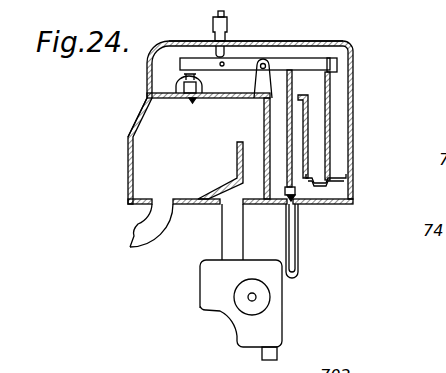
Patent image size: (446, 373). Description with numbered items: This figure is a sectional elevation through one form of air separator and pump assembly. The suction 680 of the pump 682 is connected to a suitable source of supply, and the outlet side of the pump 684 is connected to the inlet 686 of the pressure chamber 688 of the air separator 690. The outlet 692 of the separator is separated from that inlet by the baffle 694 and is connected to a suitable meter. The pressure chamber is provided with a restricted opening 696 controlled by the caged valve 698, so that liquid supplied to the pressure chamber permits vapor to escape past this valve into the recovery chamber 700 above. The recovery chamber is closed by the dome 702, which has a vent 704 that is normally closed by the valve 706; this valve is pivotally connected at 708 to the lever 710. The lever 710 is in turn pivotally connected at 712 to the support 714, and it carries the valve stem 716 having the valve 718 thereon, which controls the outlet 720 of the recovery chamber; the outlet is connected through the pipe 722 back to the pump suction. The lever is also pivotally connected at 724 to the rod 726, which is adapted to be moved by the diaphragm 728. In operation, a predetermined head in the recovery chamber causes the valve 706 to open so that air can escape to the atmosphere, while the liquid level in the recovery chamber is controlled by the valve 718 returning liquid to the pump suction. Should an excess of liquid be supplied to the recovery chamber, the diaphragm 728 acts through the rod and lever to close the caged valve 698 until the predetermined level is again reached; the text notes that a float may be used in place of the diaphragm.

The suction 680 is at (277, 351).
The pump 682 is at (283, 298).
The outlet side of the pump 684 is at (218, 257).
The inlet 686 is at (218, 205).
The pressure chamber 688 is at (130, 134).
The air separator 690 is at (143, 105).
The outlet 692 is at (143, 208).
The baffle 694 is at (222, 184).
The restricted opening 696 is at (183, 94).
The caged valve 698 is at (177, 77).
The recovery chamber 700 is at (302, 122).
The dome 702 is at (338, 40).
The vent 704 is at (226, 29).
The valve 706 is at (212, 40).
The pivot 708 is at (224, 62).
The lever 710 is at (278, 61).
The pivot 712 is at (260, 68).
The support 714 is at (267, 83).
The valve stem 716 is at (292, 161).
The valve 718 is at (295, 201).
The outlet 720 is at (287, 204).
The pipe 722 is at (297, 258).
The pivot 724 is at (337, 62).
The rod 726 is at (328, 135).
The diaphragm 728 is at (333, 178).